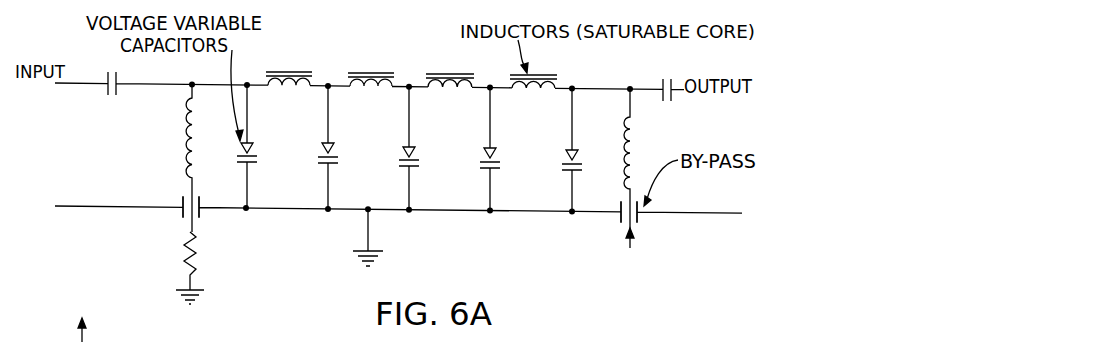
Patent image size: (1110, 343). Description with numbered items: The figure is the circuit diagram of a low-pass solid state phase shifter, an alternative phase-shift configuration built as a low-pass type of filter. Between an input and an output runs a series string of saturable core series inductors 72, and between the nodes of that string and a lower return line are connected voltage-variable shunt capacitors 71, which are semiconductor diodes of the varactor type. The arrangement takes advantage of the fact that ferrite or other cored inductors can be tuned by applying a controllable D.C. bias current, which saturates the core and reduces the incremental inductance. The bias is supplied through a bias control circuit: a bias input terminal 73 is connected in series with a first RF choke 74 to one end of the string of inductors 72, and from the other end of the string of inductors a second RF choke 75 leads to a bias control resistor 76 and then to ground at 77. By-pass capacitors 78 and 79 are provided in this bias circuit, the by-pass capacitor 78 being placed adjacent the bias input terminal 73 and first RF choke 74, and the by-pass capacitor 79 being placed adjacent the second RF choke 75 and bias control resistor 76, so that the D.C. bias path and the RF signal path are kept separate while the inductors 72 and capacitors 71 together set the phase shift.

The voltage-variable shunt capacitor 71 is at (257, 159).
The saturable core series inductor 72 is at (300, 72).
The bias input terminal 73 is at (636, 243).
The first RF choke 74 is at (638, 147).
The second RF choke 75 is at (185, 138).
The bias control resistor 76 is at (186, 255).
The ground 77 is at (185, 301).
The by-pass capacitor 78 is at (620, 222).
The by-pass capacitor 79 is at (205, 214).